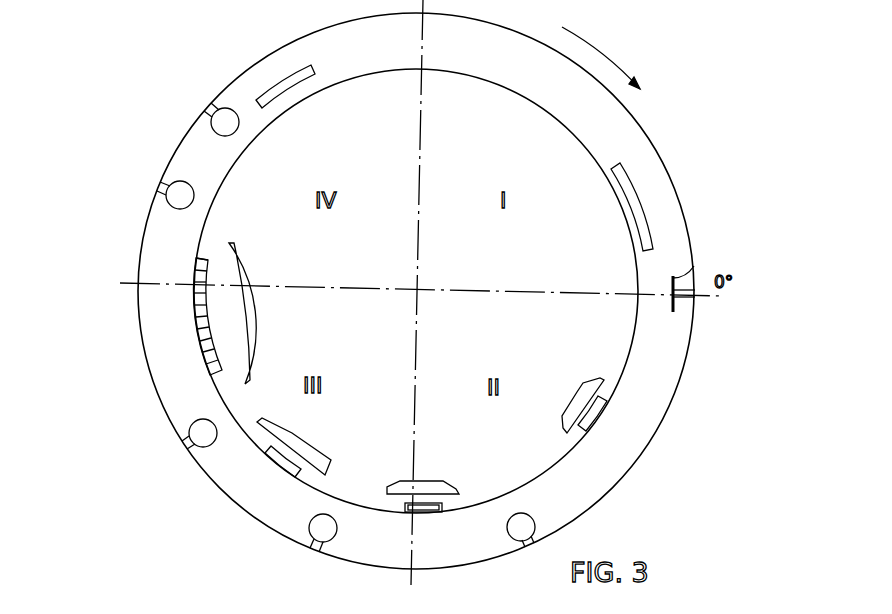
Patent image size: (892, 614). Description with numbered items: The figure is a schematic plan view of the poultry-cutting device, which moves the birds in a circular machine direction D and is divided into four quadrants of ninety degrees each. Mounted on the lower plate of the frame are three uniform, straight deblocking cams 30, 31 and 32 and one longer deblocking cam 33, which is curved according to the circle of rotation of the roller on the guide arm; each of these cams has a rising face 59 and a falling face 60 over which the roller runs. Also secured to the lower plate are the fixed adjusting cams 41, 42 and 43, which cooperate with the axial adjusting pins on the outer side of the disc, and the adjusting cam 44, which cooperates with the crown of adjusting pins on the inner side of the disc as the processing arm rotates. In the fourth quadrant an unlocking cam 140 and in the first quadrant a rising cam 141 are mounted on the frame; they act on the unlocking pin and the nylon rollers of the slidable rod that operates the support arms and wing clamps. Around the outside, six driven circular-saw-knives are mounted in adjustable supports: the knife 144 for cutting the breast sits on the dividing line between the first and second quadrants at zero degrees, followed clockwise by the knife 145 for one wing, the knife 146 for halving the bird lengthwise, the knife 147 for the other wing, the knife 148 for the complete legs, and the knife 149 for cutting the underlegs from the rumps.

The deblocking cam 30 is at (584, 396).
The deblocking cam 31 is at (420, 483).
The deblocking cam 32 is at (294, 436).
The deblocking cam 33 is at (237, 312).
The adjusting cam 41 is at (604, 412).
The adjusting cam 42 is at (428, 508).
The adjusting cam 43 is at (278, 460).
The adjusting cam 44 is at (206, 347).
The rising face 59 is at (249, 379).
The falling face 60 is at (233, 246).
The unlocking cam 140 is at (291, 90).
The rising cam 141 is at (627, 183).
The circular-saw-knife 144 is at (693, 258).
The circular-saw-knife 145 is at (521, 528).
The circular-saw-knife 146 is at (322, 528).
The circular-saw-knife 147 is at (204, 434).
The circular-saw-knife 148 is at (178, 165).
The circular-saw-knife 149 is at (226, 118).
The direction of rotation D is at (601, 58).